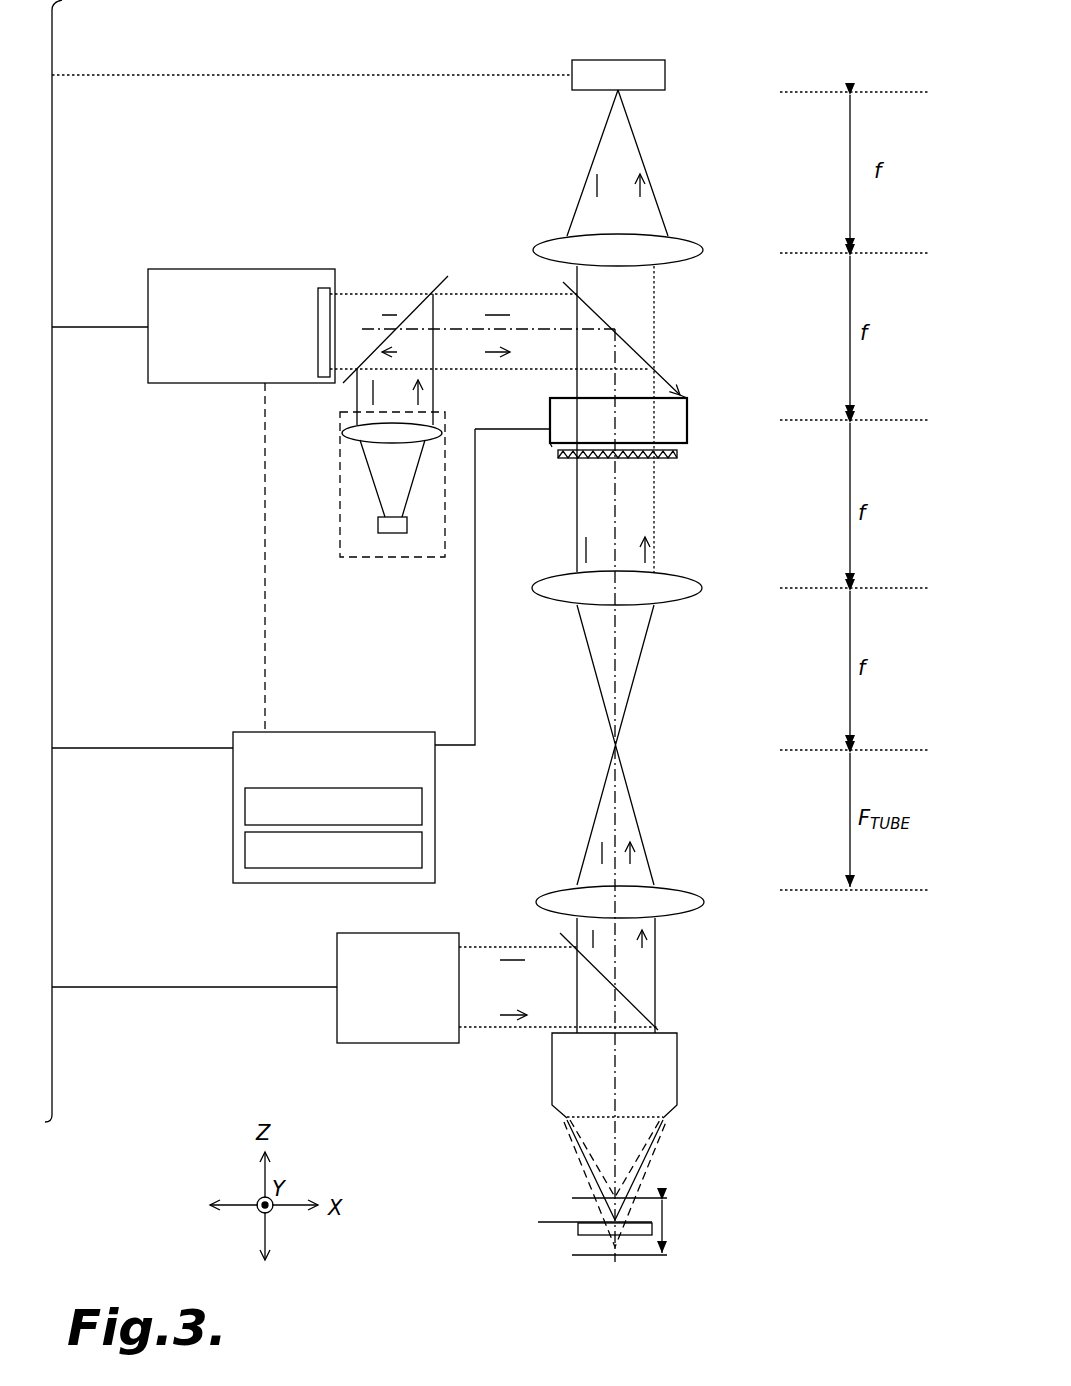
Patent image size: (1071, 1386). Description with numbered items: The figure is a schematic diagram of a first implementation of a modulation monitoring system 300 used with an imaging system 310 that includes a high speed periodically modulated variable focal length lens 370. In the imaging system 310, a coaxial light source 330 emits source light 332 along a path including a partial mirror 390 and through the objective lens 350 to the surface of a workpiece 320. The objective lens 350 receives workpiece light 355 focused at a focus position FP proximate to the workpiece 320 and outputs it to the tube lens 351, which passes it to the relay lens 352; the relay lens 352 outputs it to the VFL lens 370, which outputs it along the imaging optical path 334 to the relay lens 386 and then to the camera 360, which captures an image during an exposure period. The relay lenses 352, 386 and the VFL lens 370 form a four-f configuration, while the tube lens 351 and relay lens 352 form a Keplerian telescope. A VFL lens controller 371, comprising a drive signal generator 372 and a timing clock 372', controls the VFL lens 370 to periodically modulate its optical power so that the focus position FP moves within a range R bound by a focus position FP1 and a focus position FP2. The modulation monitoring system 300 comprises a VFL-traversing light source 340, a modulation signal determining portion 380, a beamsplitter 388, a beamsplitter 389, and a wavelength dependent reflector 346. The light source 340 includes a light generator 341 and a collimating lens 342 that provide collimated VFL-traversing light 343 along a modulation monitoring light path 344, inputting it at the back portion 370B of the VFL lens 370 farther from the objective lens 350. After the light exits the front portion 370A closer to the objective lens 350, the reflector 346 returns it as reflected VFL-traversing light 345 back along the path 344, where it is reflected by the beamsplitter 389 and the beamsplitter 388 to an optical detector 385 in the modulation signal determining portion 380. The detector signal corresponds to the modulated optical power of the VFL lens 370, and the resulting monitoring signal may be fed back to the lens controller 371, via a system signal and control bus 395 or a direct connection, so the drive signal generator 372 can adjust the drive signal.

The modulation monitoring system 300 is at (350, 196).
The imaging system 310 is at (688, 43).
The workpiece 320 is at (578, 1228).
The light source 330 is at (370, 933).
The source light 332 is at (512, 1013).
The imaging optical path 334 is at (618, 640).
The VFL-traversing light source 340 is at (340, 470).
The light generator 341 is at (378, 527).
The collimating lens 342 is at (358, 446).
The VFL-traversing light 343 is at (487, 350).
The modulation monitoring light path 344 is at (455, 332).
The reflected VFL-traversing light 345 is at (370, 352).
The wavelength dependent reflector 346 is at (678, 457).
The objective lens 350 is at (677, 1063).
The tube lens 351 is at (700, 895).
The relay lens 352 is at (557, 602).
The image light 355 is at (597, 192).
The camera 360 is at (575, 92).
The variable focal length (VFL) lens 370 is at (687, 420).
The front portion of the VFL lens 370A is at (553, 450).
The back portion of the VFL lens 370B is at (684, 394).
The VFL lens controller 371 is at (325, 732).
The drive signal generator 372 is at (363, 806).
The timing clock 372' is at (375, 850).
The modulation signal determining portion 380 is at (250, 269).
The optical detector 385 is at (321, 288).
The relay lens 386 is at (703, 252).
The beamsplitter 388 is at (441, 283).
The beamsplitter 389 is at (636, 348).
The partial mirror 390 is at (642, 1005).
The system signal and control bus 395 is at (55, 1072).
The focus position FP is at (552, 1222).
The focus position FP1 is at (660, 1198).
The focus position FP2 is at (660, 1255).
The range R is at (662, 1218).